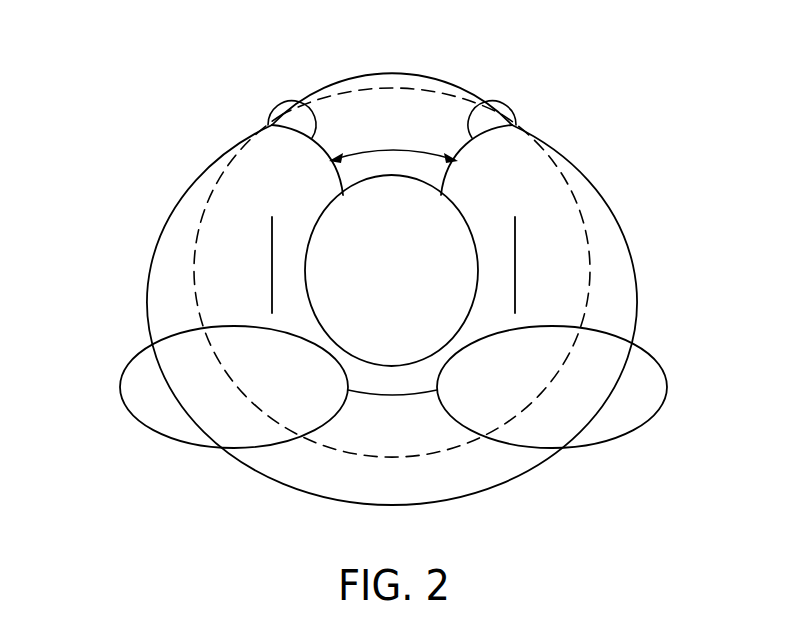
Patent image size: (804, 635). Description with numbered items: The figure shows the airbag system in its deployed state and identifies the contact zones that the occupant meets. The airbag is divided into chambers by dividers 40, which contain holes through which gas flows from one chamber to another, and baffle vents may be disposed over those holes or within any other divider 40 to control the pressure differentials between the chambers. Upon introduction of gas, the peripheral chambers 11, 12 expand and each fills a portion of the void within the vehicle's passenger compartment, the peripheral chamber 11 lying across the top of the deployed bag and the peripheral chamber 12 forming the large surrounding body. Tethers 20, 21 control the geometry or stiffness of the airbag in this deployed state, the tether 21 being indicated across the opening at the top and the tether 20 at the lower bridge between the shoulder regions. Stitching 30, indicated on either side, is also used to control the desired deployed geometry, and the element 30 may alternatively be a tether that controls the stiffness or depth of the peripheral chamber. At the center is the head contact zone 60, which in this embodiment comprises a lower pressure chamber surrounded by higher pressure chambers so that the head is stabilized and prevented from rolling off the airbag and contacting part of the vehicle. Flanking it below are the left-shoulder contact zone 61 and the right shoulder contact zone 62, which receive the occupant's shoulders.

The peripheral chamber 11 is at (372, 110).
The peripheral chamber 12 is at (607, 242).
The tether 20 is at (407, 397).
The tether 21 is at (415, 150).
The stitching 30 is at (272, 263).
The divider 40 is at (290, 104).
The head contact zone 60 is at (437, 240).
The left-shoulder contact zone 61 is at (147, 407).
The right shoulder contact zone 62 is at (640, 404).